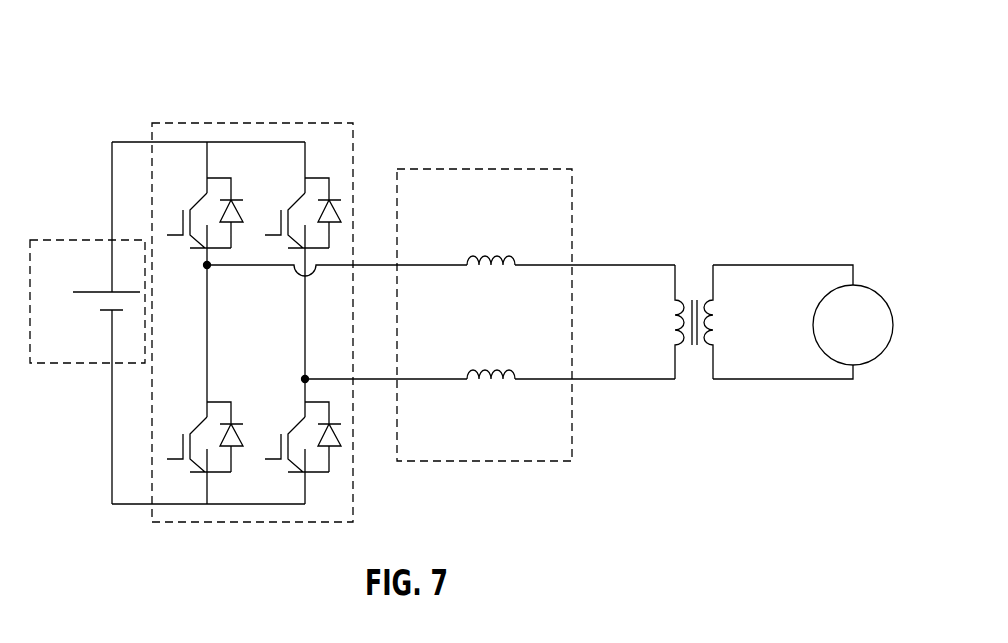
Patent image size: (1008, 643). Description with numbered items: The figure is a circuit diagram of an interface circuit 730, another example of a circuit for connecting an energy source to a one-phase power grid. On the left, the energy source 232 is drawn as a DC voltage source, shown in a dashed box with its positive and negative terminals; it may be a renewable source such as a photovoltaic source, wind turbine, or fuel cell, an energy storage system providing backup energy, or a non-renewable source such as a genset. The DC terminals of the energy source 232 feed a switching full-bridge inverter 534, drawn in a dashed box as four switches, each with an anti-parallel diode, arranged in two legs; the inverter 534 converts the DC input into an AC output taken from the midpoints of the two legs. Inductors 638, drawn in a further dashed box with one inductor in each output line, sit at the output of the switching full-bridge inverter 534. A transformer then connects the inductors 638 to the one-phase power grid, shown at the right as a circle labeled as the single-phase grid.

The energy source 232 is at (100, 239).
The switching full-bridge inverter 534 is at (222, 124).
The inductors 638 is at (498, 170).
The interface circuit 730 is at (622, 90).